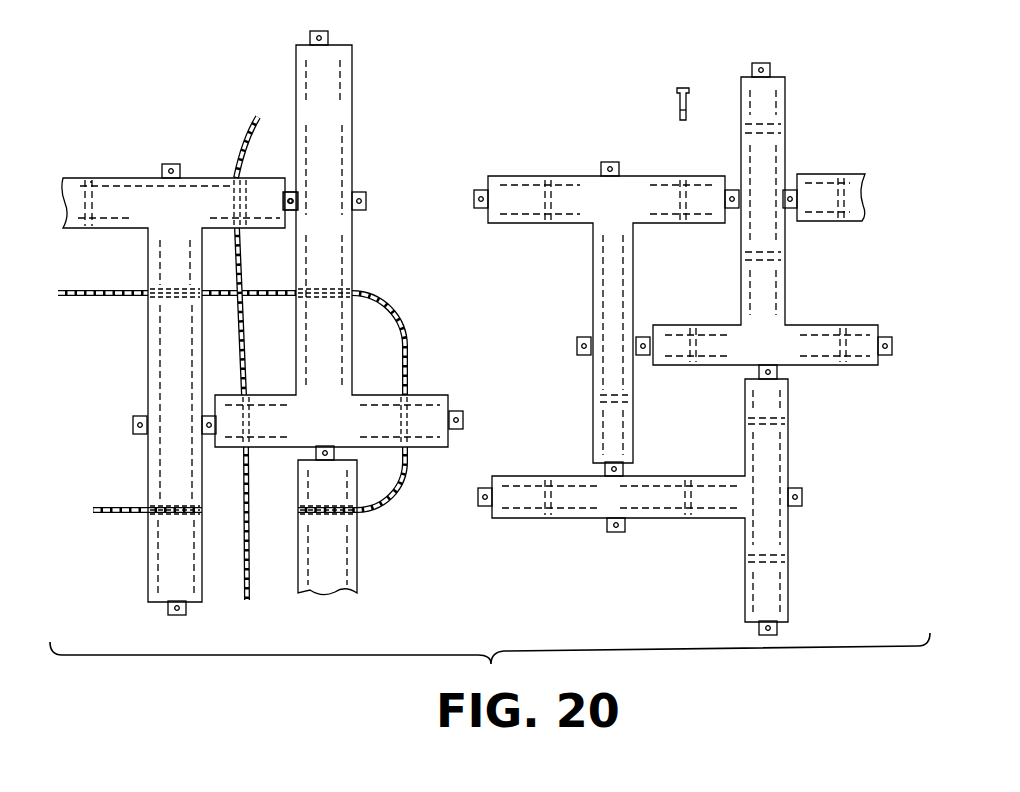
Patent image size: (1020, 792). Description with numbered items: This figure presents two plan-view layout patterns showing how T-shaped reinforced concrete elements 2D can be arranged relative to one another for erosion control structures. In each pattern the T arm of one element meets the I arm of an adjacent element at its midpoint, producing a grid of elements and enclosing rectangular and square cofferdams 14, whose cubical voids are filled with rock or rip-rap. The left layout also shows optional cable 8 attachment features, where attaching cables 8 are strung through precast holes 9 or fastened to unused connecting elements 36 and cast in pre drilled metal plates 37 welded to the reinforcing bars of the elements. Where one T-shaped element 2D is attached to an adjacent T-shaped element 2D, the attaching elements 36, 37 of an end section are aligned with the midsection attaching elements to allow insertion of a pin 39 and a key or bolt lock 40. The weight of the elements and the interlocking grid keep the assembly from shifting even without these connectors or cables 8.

The T-shaped reinforced concrete element 2D is at (346, 145).
The attaching cable 8 is at (377, 292).
The precast hole 9 is at (345, 108).
The cofferdam 14 is at (284, 343).
The connecting element 36 is at (462, 410).
The cast in pre drilled metal plate 37 is at (172, 160).
The pin 39 is at (680, 92).
The key or bolt lock 40 is at (667, 123).